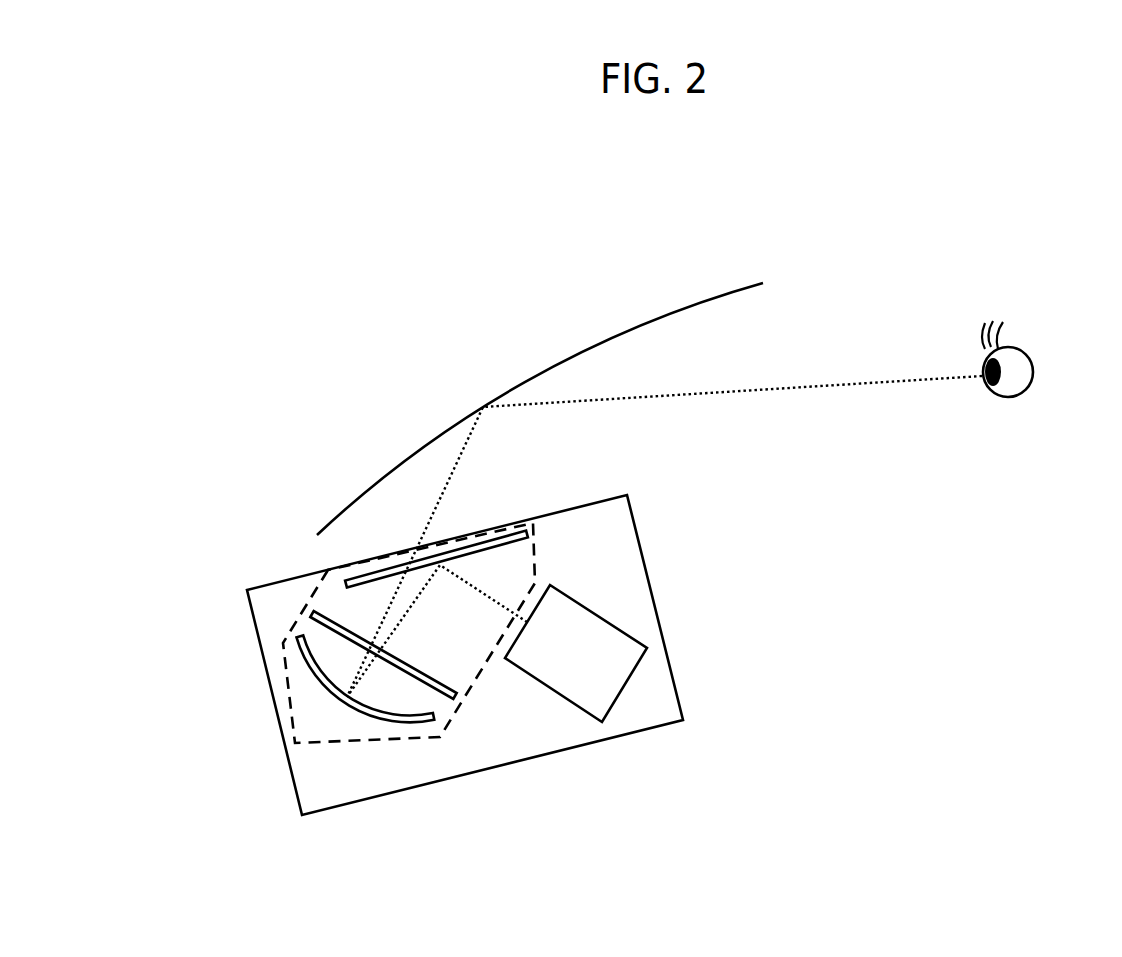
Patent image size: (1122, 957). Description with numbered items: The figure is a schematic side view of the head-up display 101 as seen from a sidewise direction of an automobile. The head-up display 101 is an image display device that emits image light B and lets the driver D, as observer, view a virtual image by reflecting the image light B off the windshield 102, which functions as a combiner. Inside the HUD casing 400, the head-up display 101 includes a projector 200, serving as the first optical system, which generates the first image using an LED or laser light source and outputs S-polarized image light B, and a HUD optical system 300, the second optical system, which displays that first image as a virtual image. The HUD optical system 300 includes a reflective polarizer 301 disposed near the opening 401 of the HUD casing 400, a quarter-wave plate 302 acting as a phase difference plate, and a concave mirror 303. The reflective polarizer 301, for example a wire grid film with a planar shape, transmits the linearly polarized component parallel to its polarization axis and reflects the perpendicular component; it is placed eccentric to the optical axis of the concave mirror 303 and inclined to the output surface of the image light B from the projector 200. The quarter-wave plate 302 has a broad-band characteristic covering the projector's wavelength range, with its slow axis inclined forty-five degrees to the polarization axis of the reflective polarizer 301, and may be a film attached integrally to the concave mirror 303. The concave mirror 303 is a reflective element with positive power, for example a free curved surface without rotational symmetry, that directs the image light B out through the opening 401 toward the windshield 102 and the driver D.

The head-up display 101 is at (440, 659).
The windshield 102 is at (606, 338).
The projector 200 is at (618, 626).
The HUD optical system 300 is at (357, 742).
The reflective polarizer 301 is at (327, 572).
The quarter-wave plate 302 is at (310, 612).
The concave mirror 303 is at (307, 668).
The HUD casing 400 is at (537, 760).
The opening 401 is at (490, 527).
The image light B is at (483, 597).
The driver D is at (1034, 366).